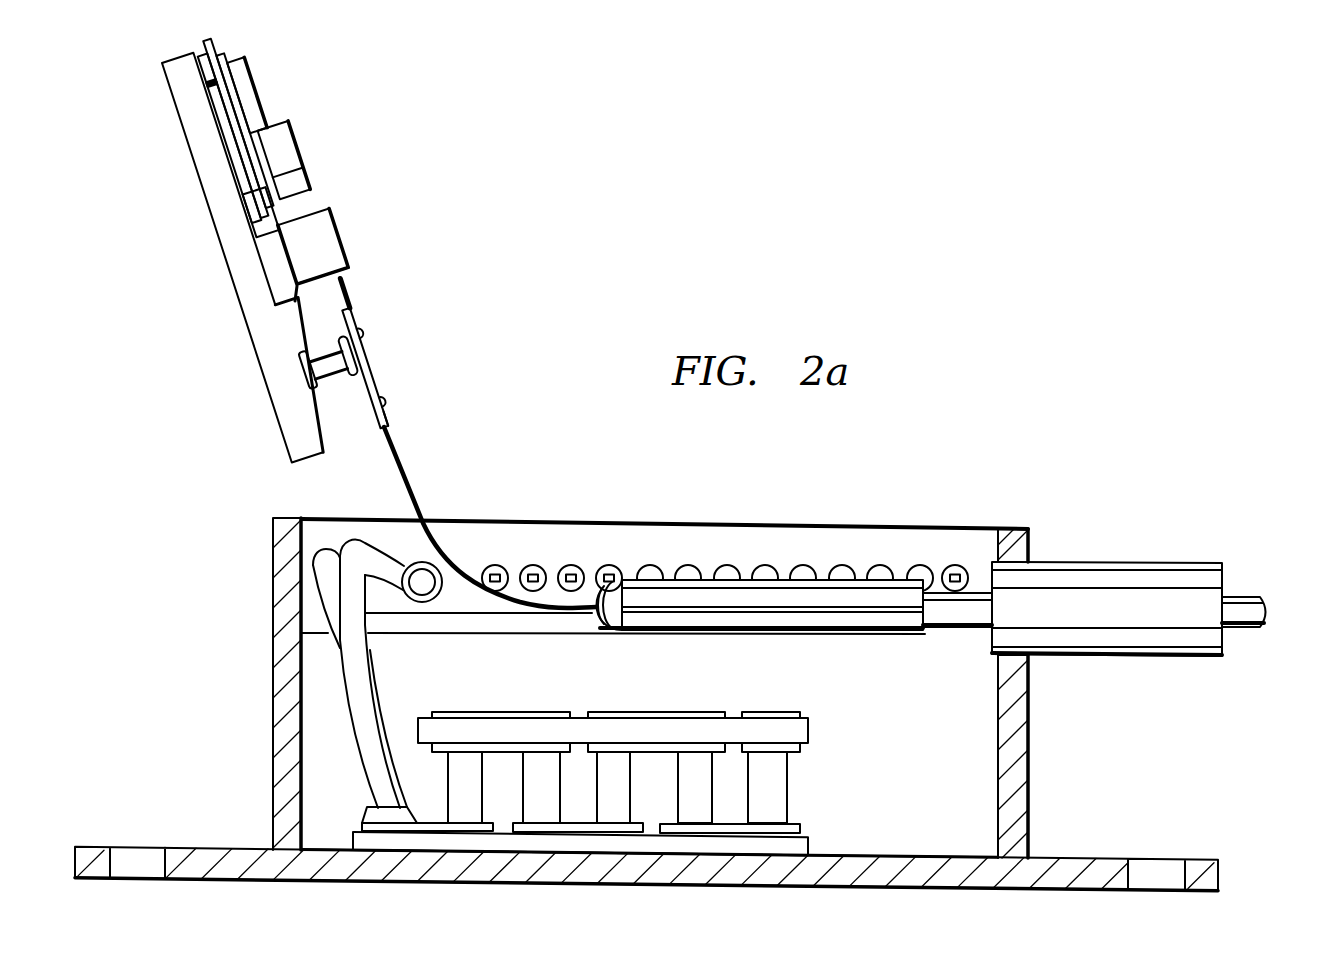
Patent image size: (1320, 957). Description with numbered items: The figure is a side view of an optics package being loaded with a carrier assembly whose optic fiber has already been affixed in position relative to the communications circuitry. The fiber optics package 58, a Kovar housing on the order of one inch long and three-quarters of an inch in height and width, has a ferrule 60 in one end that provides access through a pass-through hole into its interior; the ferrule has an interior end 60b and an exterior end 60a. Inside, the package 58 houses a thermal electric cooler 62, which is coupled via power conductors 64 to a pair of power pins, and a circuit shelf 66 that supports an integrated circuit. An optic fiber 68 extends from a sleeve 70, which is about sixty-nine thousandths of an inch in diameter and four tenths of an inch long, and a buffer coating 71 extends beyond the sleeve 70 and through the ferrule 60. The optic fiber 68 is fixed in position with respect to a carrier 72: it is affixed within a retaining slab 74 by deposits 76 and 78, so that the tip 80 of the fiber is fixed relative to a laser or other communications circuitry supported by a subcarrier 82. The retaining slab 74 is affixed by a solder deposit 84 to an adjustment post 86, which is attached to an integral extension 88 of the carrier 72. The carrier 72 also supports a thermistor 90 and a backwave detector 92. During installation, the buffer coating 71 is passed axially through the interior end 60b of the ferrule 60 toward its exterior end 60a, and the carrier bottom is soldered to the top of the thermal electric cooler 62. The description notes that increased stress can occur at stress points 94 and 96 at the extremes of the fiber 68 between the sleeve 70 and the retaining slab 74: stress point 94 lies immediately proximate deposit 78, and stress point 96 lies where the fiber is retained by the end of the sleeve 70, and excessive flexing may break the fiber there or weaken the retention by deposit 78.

The fiber optics package 58 is at (1030, 762).
The ferrule 60 is at (1112, 558).
The exterior end of ferrule 60a is at (1241, 578).
The interior end of ferrule 60b is at (981, 569).
The thermal electric cooler 62 is at (810, 730).
The power conductors 64 is at (375, 666).
The circuit shelf 66 is at (522, 634).
The optic fiber 68 is at (413, 482).
The sleeve 70 is at (706, 572).
The buffer coating 71 is at (953, 640).
The carrier 72 is at (220, 252).
The retaining slab 74 is at (360, 320).
The deposit 76 is at (370, 333).
The deposit 78 is at (390, 400).
The tip of optic fiber 80 is at (352, 280).
The subcarrier 82 is at (328, 260).
The solder deposit 84 is at (363, 377).
The adjustment post 86 is at (330, 352).
The integral extension 88 is at (287, 422).
The thermistor 90 is at (253, 85).
The backwave detector 92 is at (300, 153).
The stress point 94 is at (402, 419).
The stress point 96 is at (588, 611).